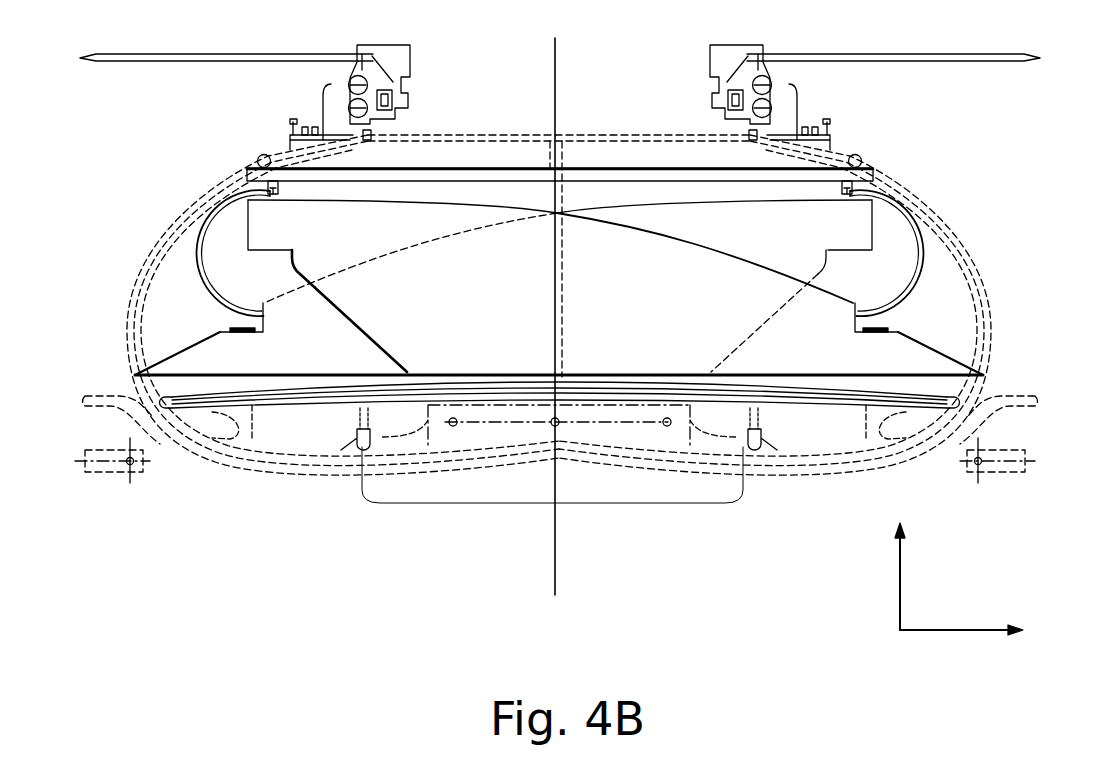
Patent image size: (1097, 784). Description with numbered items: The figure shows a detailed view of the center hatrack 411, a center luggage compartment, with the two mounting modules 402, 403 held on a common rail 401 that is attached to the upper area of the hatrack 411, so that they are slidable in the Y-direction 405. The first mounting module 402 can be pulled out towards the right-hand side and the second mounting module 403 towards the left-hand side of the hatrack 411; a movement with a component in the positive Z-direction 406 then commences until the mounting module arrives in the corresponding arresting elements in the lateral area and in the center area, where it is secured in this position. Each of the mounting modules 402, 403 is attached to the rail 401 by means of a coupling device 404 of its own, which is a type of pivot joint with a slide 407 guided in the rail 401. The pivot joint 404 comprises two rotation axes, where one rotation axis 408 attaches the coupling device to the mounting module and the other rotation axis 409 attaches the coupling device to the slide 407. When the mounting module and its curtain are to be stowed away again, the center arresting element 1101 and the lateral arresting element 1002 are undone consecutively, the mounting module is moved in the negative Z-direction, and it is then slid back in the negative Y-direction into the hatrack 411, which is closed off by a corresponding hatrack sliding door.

The rail 401 is at (443, 177).
The first mounting module 402 is at (446, 360).
The second mounting module 403 is at (862, 221).
The coupling device 404 is at (197, 262).
The Y-direction 405 is at (960, 633).
The Z-direction 406 is at (899, 577).
The slide 407 is at (262, 182).
The rotation axis 408 is at (306, 278).
The rotation axis 409 is at (277, 194).
The center hatrack 411 is at (950, 221).
The lateral arresting element 1002 is at (222, 331).
The center arresting element 1101 is at (206, 242).